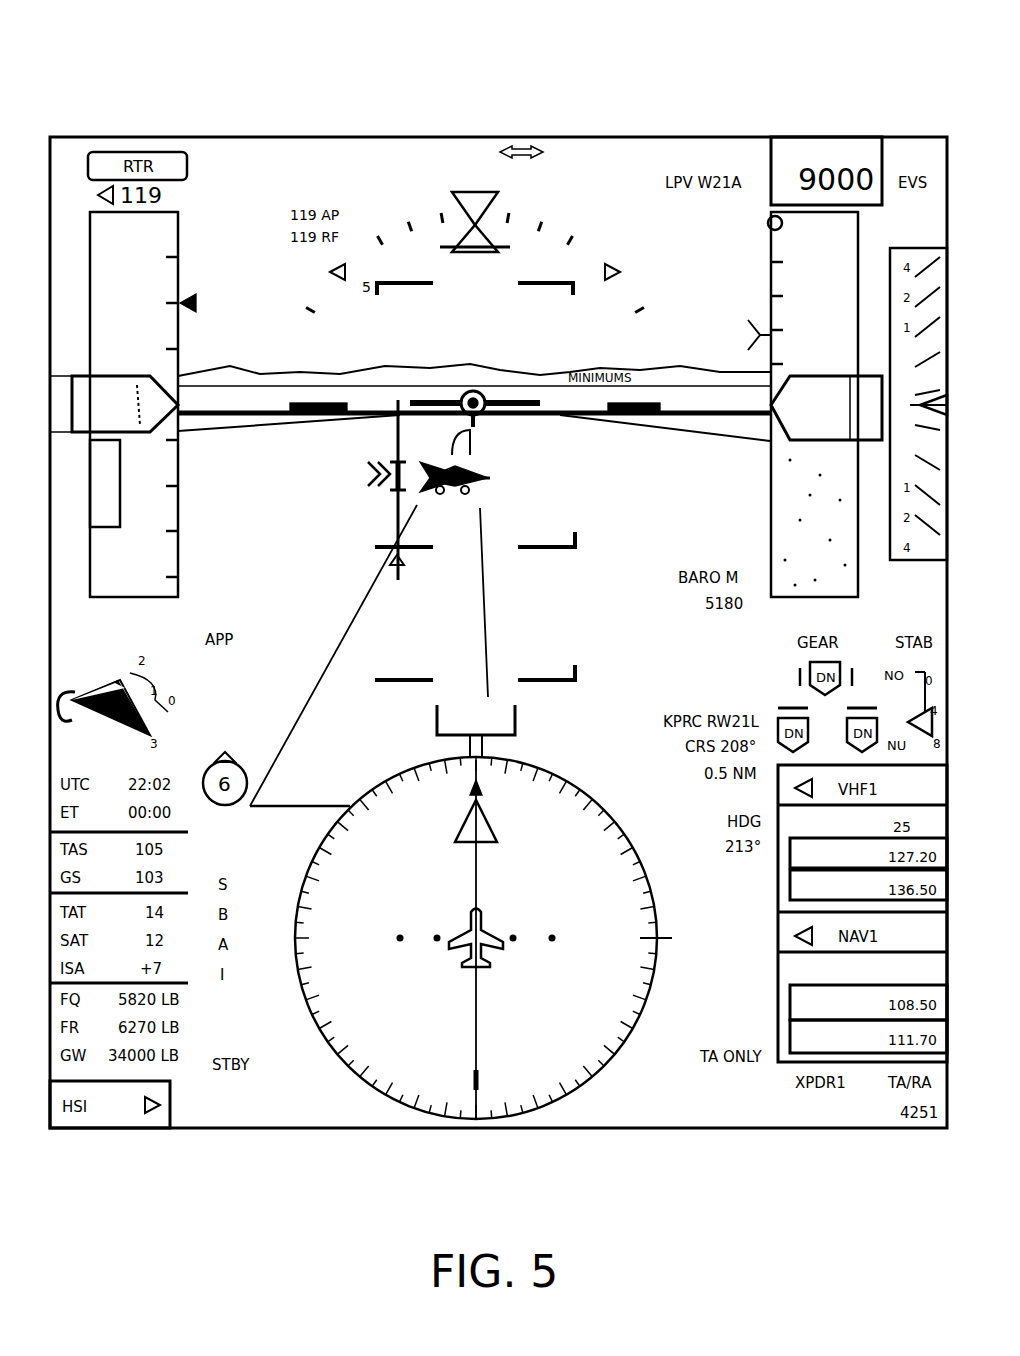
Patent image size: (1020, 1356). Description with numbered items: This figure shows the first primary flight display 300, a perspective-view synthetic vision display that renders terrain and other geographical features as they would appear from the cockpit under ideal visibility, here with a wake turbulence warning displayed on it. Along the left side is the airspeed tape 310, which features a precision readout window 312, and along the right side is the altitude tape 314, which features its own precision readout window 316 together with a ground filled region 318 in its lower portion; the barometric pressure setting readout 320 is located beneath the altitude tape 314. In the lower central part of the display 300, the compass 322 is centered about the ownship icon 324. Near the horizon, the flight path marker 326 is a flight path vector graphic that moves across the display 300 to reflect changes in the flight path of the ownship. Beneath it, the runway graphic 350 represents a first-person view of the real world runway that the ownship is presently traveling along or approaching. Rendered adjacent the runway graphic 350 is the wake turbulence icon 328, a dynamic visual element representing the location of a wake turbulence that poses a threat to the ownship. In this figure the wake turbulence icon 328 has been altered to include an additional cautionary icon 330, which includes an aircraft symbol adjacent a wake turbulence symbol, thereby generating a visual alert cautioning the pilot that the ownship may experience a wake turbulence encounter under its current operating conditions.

The first primary flight display 300 is at (289, 95).
The airspeed tape 310 is at (176, 237).
The precision readout window 312 is at (100, 377).
The altitude tape 314 is at (772, 242).
The precision readout window 316 is at (790, 435).
The ground filled region 318 is at (792, 511).
The barometric pressure setting readout 320 is at (843, 613).
The compass 322 is at (598, 803).
The ownship icon 324 is at (483, 925).
The flight path marker 326 is at (509, 396).
The wake turbulence icon 328 is at (350, 506).
The cautionary icon 330 is at (505, 480).
The runway graphic 350 is at (442, 635).